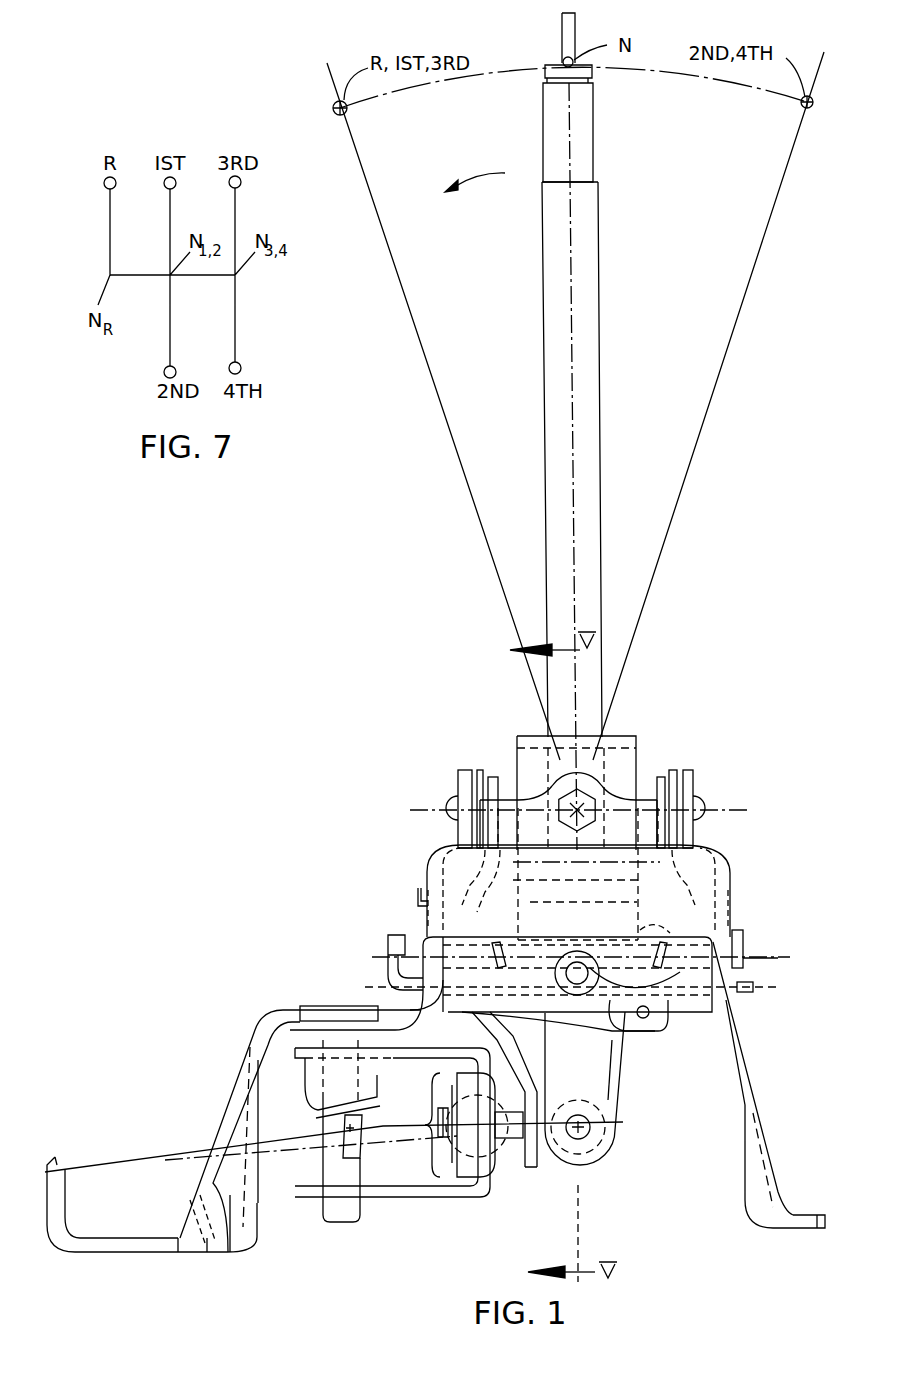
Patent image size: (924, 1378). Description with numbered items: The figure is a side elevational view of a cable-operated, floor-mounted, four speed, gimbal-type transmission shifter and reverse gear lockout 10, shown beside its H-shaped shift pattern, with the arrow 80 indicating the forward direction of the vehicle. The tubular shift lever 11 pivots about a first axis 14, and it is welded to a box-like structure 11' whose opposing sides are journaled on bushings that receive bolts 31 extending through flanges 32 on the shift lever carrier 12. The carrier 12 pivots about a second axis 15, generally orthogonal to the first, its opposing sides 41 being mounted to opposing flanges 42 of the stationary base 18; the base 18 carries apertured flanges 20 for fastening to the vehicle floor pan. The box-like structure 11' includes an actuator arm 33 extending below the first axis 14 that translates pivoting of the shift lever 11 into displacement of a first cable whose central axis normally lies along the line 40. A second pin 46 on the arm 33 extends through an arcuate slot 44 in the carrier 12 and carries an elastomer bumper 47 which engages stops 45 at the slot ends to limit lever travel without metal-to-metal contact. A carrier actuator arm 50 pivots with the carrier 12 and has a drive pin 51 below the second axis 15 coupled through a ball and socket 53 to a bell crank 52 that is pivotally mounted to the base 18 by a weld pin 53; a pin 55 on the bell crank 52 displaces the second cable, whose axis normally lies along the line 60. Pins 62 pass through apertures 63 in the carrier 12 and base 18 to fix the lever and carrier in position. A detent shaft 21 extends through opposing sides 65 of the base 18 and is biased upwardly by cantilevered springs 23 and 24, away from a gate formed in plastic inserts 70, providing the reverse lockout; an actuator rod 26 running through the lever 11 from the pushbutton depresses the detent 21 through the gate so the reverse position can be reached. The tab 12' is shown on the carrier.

The transmission shifter and reverse gear lockout 10 is at (724, 565).
The shift lever 11 is at (572, 457).
The box-like structure 11' is at (576, 793).
The shift lever carrier 12 is at (575, 870).
The housing tab 12' is at (643, 1011).
The first axis 14 is at (604, 800).
The second axis 15 is at (746, 812).
The stationary base 18 is at (267, 1015).
The apertured flanges 20 is at (222, 1252).
The detent 21 is at (747, 957).
The cantilevered spring 23 is at (428, 913).
The cantilevered spring 24 is at (737, 930).
The actuator rod 26 is at (574, 18).
The bolts 31 is at (553, 799).
The flanges 32 is at (578, 778).
The actuator arm 33 is at (582, 1065).
The line 40 is at (393, 1147).
The opposing sides of the shift lever carrier 41 is at (480, 777).
The opposing flanges of the base 42 is at (458, 773).
The arcuate slot 44 is at (612, 1020).
The stops 45 is at (501, 943).
The second pin 46 is at (578, 967).
The elastomer bumper 47 is at (592, 967).
The carrier actuator arm 50 is at (493, 1027).
The drive pin 51 is at (510, 1123).
The bell crank 52 is at (427, 1053).
The weld pin 53 is at (330, 1012).
The pin 55 is at (355, 1160).
The line 60 is at (167, 1153).
The pins 62 is at (402, 930).
The apertures 63 is at (649, 1016).
The opposing sides of the base 65 is at (432, 872).
The plastic inserts 70 is at (425, 885).
The arrow 80 is at (475, 192).